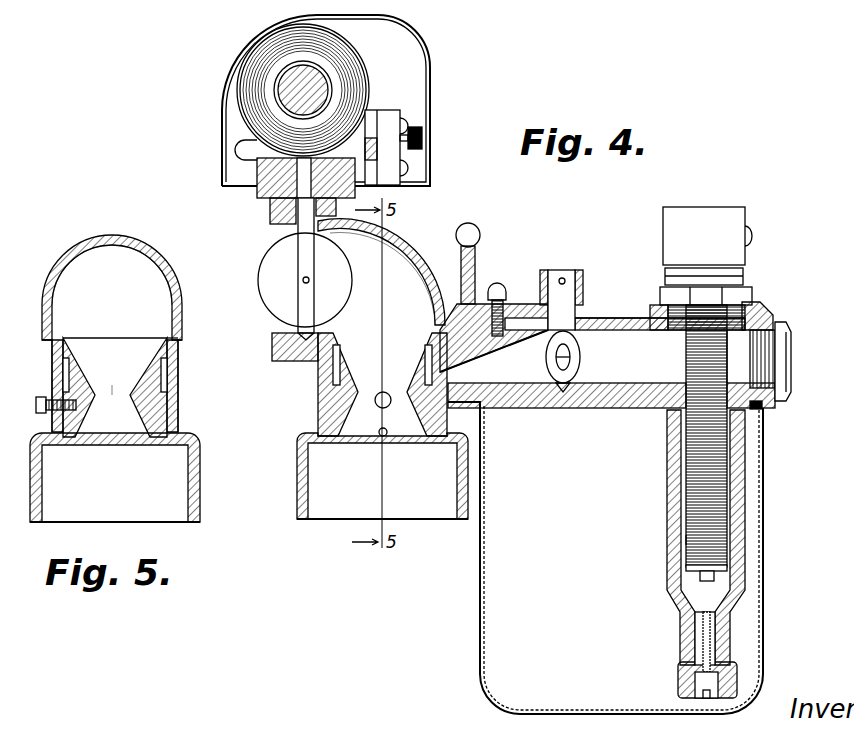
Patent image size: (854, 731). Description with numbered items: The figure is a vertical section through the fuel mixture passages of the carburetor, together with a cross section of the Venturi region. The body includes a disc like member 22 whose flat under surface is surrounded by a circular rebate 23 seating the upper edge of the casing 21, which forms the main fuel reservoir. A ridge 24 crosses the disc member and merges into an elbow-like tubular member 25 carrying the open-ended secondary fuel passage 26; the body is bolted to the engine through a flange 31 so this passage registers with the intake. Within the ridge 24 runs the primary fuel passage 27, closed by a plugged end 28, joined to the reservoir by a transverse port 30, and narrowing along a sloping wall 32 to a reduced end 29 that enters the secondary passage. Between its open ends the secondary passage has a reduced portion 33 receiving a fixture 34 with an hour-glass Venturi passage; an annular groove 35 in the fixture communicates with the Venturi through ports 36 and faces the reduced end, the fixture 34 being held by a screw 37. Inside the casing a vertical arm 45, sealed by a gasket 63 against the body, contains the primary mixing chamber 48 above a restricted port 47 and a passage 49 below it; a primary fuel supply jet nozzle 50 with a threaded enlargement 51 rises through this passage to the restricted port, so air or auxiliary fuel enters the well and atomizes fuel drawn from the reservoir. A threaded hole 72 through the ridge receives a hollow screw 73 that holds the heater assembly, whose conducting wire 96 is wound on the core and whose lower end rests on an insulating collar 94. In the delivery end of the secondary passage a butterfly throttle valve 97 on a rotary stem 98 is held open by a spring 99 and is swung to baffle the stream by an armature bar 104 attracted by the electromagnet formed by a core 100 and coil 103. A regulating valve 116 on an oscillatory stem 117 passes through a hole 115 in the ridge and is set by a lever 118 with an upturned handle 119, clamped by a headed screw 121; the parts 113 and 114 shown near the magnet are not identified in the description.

In FIG. 4, the casing 21 is at (478, 566).
In FIG. 4, the disc like member 22 is at (752, 405).
In FIG. 4, the circular rebate 23 is at (495, 409).
In FIG. 4, the ridge 24 is at (623, 316).
In FIG. 4, the elbow-like tubular member 25 is at (413, 256).
In FIG. 5, the elbow-like tubular member 25 is at (173, 266).
In FIG. 4, the secondary fuel passage 26 is at (415, 283).
In FIG. 5, the secondary fuel passage 26 is at (107, 258).
In FIG. 4, the primary fuel passage 27 is at (630, 342).
In FIG. 4, the plugged end 28 is at (776, 341).
In FIG. 4, the reduced end 29 is at (448, 373).
In FIG. 4, the transverse port 30 is at (731, 394).
In FIG. 4, the flange 31 is at (278, 350).
In FIG. 4, the sloping wall 32 is at (498, 338).
In FIG. 5, the reduced portion 33 is at (168, 346).
In FIG. 4, the fixture 34 is at (332, 345).
In FIG. 5, the fixture 34 is at (66, 340).
In FIG. 4, the annular groove 35 is at (333, 372).
In FIG. 5, the annular groove 35 is at (168, 368).
In FIG. 4, the ports 36 is at (386, 393).
In FIG. 5, the ports 36 is at (143, 377).
In FIG. 5, the screw 37 is at (41, 398).
In FIG. 4, the vertical arm 45 is at (745, 496).
In FIG. 4, the restricted port 47 is at (712, 611).
In FIG. 4, the primary mixing chamber 48 is at (727, 466).
In FIG. 4, the passage 49 is at (715, 634).
In FIG. 4, the primary fuel supply jet nozzle 50 is at (711, 649).
In FIG. 4, the threaded enlargement 51 is at (735, 692).
In FIG. 4, the gasket 63 is at (762, 411).
In FIG. 4, the threaded hole 72 is at (757, 320).
In FIG. 4, the hollow screw 73 is at (745, 298).
In FIG. 4, the insulating collar 94 is at (700, 572).
In FIG. 4, the conducting wire 96 is at (688, 540).
In FIG. 4, the throttle valve 97 is at (270, 282).
In FIG. 4, the rotary stem 98 is at (300, 228).
In FIG. 4, the spring 99 is at (298, 207).
In FIG. 4, the core 100 is at (290, 96).
In FIG. 4, the coil 103 is at (335, 56).
In FIG. 4, the armature bar 104 is at (257, 178).
In FIG. 4, the switch 113 is at (384, 115).
In FIG. 4, the button 114 is at (422, 139).
In FIG. 4, the hole 115 is at (579, 318).
In FIG. 4, the regulating valve 116 is at (581, 360).
In FIG. 4, the oscillatory stem 117 is at (583, 272).
In FIG. 4, the lever 118 is at (553, 268).
In FIG. 4, the upturned handle 119 is at (478, 264).
In FIG. 4, the headed screw 121 is at (500, 290).